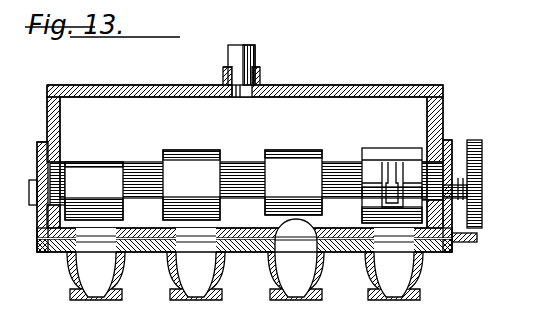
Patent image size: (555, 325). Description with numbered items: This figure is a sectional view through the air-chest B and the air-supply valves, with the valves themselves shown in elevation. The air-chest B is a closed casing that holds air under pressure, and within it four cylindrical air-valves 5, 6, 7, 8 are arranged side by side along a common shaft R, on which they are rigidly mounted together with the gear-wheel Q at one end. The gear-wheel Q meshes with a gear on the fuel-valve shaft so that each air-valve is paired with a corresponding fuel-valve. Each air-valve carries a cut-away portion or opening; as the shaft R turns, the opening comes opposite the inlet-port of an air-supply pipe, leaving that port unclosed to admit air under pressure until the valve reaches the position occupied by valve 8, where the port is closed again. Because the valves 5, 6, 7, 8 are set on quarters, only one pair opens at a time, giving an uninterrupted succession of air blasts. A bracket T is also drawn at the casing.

The air-chest B is at (240, 148).
The air-valve 5 is at (94, 191).
The air-valve 6 is at (191, 185).
The air-valve 7 is at (293, 182).
The air-valve 8 is at (376, 172).
The gear-wheel Q is at (483, 162).
The shaft R is at (250, 186).
The bracket T is at (460, 242).